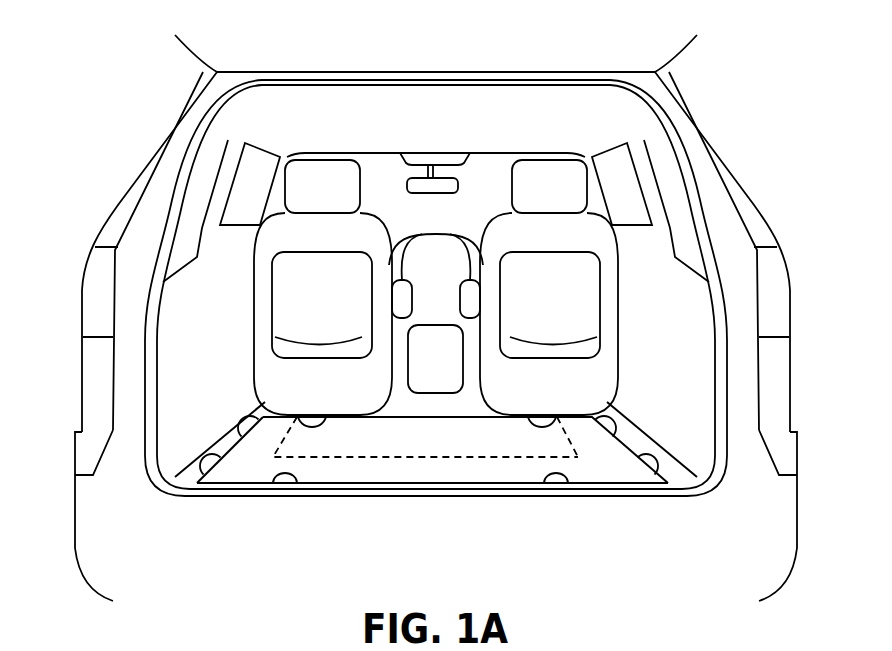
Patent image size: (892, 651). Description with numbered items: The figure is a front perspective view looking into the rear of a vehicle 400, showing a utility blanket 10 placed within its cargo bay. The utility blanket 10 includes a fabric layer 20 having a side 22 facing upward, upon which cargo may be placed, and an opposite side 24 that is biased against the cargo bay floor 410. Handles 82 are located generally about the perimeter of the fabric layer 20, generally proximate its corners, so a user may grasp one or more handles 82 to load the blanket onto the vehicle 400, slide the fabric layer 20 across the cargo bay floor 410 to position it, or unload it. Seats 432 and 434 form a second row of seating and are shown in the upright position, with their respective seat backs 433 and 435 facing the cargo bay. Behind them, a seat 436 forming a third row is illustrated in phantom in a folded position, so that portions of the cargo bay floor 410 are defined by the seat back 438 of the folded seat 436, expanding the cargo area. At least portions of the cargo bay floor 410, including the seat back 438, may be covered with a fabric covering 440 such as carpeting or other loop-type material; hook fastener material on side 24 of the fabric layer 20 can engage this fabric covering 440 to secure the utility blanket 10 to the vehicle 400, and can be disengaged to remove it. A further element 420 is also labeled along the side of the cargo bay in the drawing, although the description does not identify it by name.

The utility blanket 10 is at (733, 83).
The fabric layer 20 is at (465, 472).
The side 22 is at (253, 470).
The side 24 is at (490, 485).
The handles 82 is at (207, 455).
The vehicle 400 is at (743, 440).
The cargo bay floor 410 is at (188, 475).
The side sill trim 420 is at (660, 455).
The seat 432 is at (263, 285).
The seat back 433 is at (278, 243).
The seat 434 is at (607, 270).
The seat back 435 is at (503, 227).
The seat 436 is at (358, 445).
The seat back 438 is at (513, 445).
The fabric covering 440 is at (200, 443).